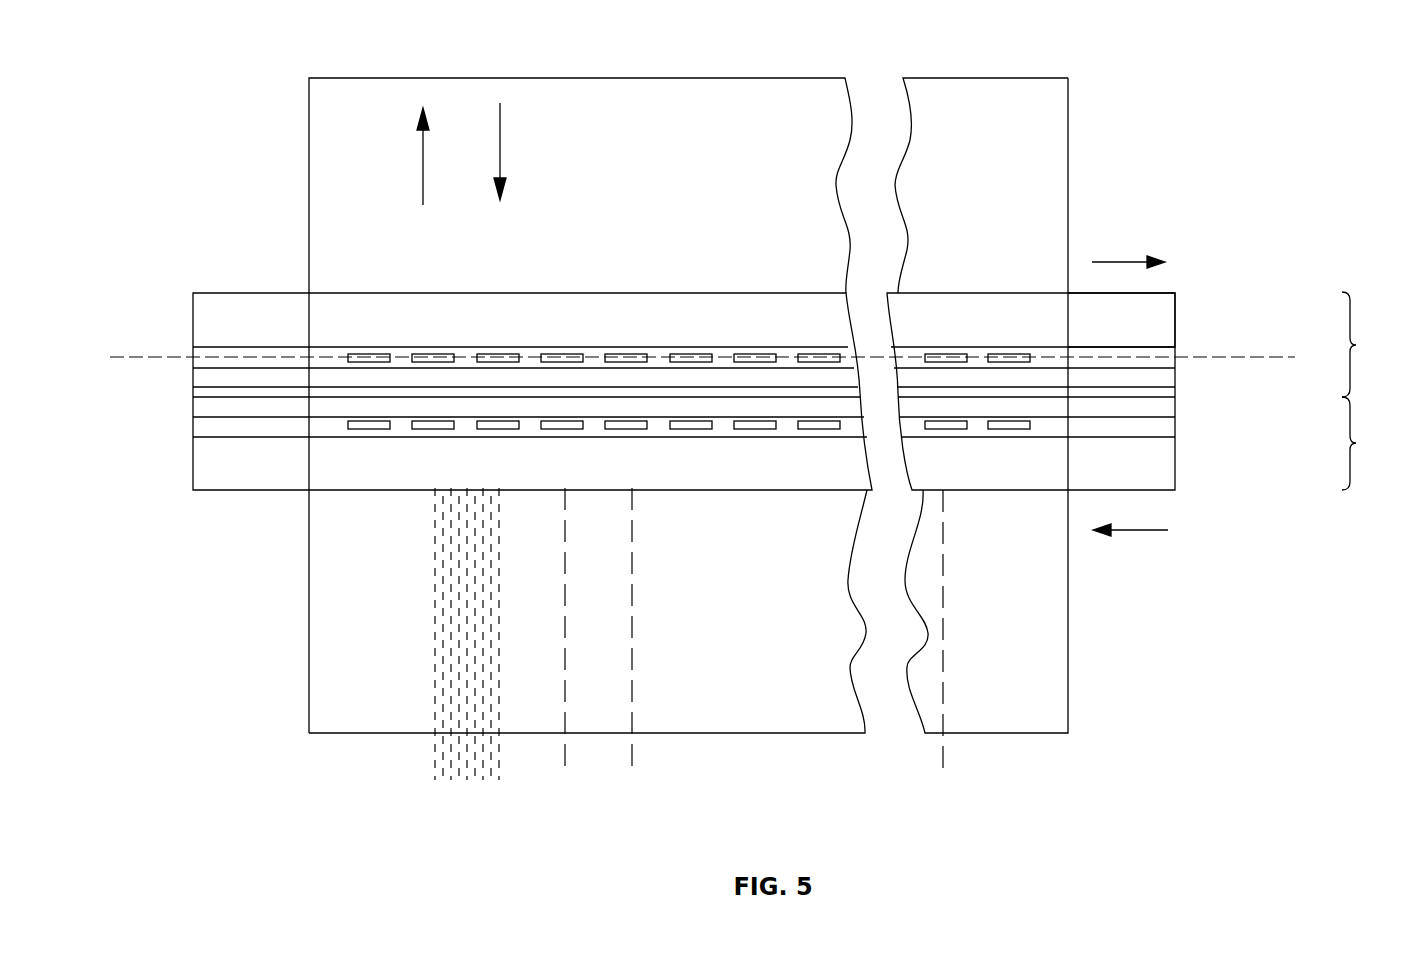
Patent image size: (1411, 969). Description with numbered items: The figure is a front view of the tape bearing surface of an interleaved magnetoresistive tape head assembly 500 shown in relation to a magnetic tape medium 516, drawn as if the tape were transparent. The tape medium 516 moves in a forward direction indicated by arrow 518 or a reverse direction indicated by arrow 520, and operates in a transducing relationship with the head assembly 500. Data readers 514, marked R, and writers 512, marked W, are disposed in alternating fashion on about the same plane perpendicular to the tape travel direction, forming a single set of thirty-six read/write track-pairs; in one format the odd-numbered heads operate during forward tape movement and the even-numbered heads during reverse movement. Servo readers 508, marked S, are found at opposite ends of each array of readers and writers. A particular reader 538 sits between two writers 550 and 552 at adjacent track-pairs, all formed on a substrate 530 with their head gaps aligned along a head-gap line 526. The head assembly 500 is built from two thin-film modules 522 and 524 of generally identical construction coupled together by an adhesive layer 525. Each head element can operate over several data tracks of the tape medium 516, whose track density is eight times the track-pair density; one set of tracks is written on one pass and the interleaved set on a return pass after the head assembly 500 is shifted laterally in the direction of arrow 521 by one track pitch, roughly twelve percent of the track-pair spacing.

The tape head assembly 500 is at (203, 133).
The magnetic tape medium 516 is at (443, 78).
The arrow 518 is at (394, 156).
The arrow 520 is at (528, 151).
The arrow 521 is at (1113, 262).
The servo readers 508 is at (357, 352).
The data readers 514 is at (419, 352).
The write head 550 is at (513, 352).
The reader 538 is at (574, 352).
The write head 552 is at (640, 352).
The writers 512 is at (424, 432).
The adhesive layer 525 is at (193, 392).
The substrate 530 is at (1160, 326).
The head-gap line 526 is at (1290, 357).
The thin-film module 522 is at (1373, 344).
The thin-film module 524 is at (1373, 443).